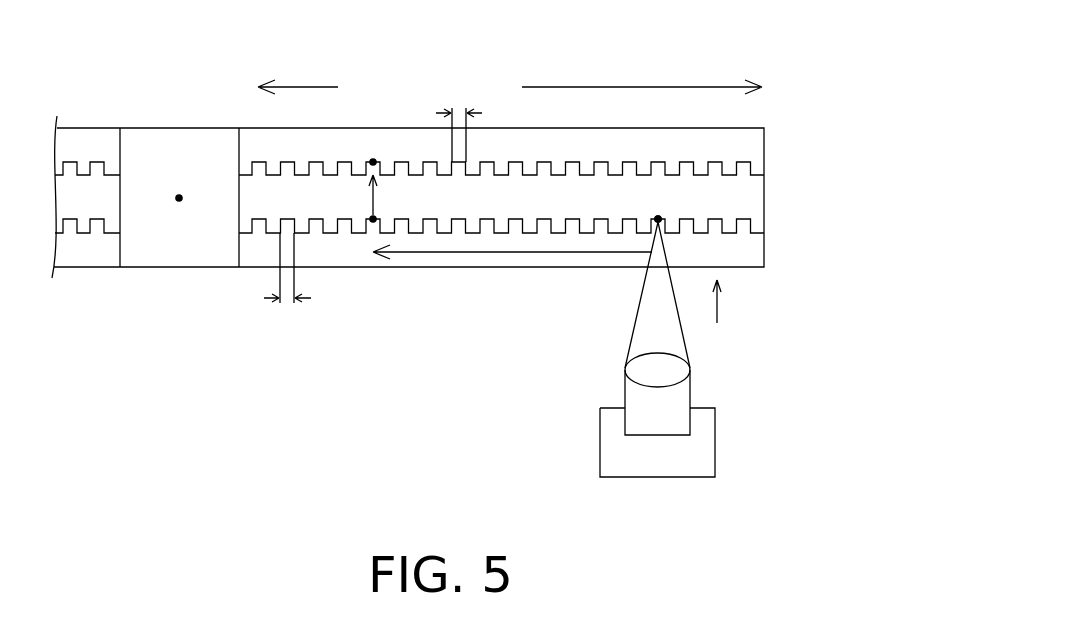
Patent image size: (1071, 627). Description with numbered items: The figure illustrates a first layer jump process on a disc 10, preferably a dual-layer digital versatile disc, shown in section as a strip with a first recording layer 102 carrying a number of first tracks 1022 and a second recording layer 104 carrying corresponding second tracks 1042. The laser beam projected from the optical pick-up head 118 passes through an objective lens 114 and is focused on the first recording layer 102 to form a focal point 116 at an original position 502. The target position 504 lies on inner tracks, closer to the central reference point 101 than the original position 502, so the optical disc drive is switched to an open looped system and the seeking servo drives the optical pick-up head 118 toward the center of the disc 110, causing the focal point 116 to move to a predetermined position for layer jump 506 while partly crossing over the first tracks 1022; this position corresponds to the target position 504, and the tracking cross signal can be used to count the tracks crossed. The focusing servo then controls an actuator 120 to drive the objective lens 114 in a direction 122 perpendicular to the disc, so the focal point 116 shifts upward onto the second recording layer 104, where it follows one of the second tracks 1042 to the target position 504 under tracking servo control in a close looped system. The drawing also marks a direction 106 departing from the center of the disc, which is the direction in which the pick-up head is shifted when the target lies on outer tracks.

The disc 10 is at (733, 139).
The central reference point 101 is at (177, 178).
The first recording layer 102 is at (752, 224).
The second recording layer 104 is at (752, 165).
The direction departing from the center of the disc 106 is at (645, 87).
The center of the disc 110 is at (300, 87).
The objective lens 114 is at (690, 370).
The focal point 116 is at (658, 219).
The optical pick-up head 118 is at (715, 440).
The actuator 120 is at (625, 390).
The direction perpendicular to the disc direction 122 is at (717, 300).
The original position 502 is at (658, 219).
The target position 504 is at (373, 158).
The predetermined position for layer jump 506 is at (373, 223).
The first tracks 1022 is at (289, 287).
The second tracks 1042 is at (459, 117).